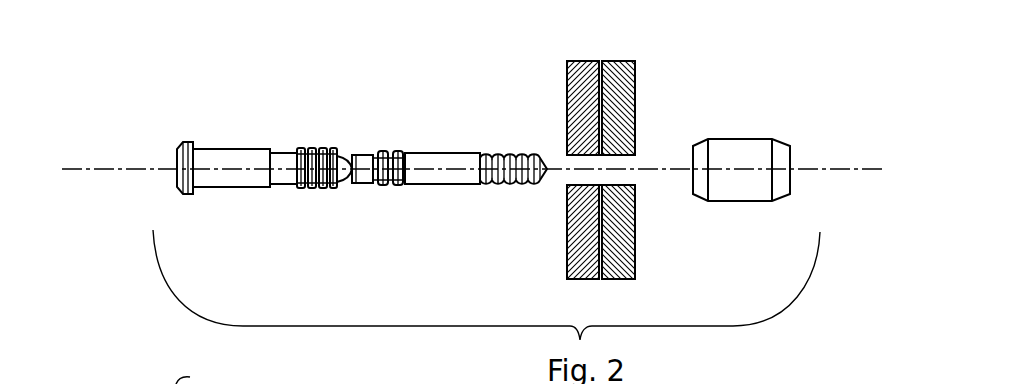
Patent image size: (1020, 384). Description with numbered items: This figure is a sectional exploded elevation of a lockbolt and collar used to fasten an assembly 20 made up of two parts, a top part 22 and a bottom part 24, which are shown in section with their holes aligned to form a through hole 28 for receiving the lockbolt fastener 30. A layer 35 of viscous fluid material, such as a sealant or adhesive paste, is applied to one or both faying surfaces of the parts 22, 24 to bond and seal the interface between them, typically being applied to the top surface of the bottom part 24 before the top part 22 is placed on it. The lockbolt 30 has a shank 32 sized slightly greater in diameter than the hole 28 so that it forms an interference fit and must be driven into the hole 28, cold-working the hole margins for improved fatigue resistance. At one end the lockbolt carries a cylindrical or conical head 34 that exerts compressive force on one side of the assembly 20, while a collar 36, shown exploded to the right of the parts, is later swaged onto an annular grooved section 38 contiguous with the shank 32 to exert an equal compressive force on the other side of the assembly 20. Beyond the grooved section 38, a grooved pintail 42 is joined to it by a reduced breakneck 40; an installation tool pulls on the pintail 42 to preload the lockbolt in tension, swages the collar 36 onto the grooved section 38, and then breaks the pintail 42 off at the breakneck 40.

The assembly 20 is at (682, 96).
The top part 22 is at (582, 61).
The bottom part 24 is at (612, 61).
The through hole 28 is at (567, 168).
The lockbolt fastener 30 is at (322, 78).
The shank 32 is at (216, 190).
The head 34 is at (178, 153).
The layer of viscous fluid material 35 is at (237, 383).
The collar 36 is at (733, 182).
The annular grooved section 38 is at (308, 149).
The reduced breakneck 40 is at (342, 187).
The grooved pintail 42 is at (422, 186).